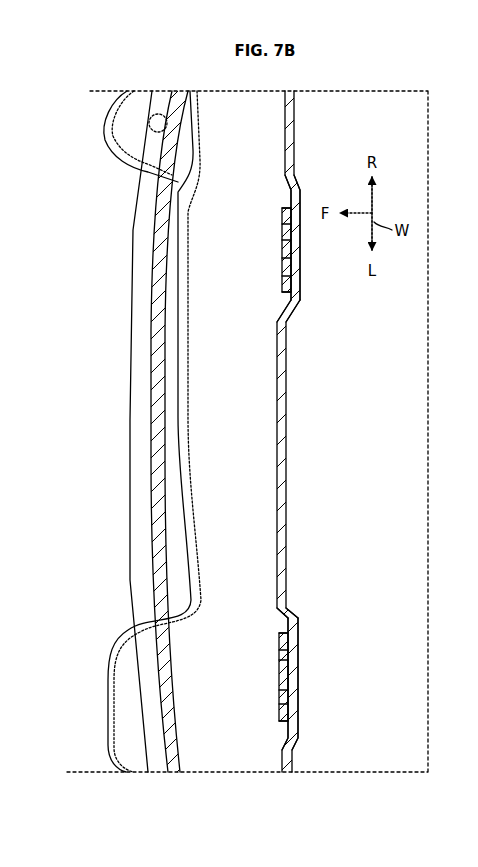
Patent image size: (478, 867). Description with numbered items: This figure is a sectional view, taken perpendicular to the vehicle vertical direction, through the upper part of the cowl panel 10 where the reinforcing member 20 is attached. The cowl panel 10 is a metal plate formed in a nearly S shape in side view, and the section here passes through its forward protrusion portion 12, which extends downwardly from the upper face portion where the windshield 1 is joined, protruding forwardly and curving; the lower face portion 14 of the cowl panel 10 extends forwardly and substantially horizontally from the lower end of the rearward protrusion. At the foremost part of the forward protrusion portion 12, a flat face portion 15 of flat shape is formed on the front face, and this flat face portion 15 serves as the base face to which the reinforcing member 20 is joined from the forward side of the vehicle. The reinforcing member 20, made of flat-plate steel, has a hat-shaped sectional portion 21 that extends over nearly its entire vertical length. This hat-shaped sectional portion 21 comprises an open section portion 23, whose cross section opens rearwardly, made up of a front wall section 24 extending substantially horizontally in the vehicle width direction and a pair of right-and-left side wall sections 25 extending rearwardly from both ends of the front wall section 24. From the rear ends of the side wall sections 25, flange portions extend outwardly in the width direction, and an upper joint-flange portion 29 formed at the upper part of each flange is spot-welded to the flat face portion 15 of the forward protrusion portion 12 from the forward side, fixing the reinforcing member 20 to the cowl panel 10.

The windshield 1 is at (130, 398).
The cowl panel 10 is at (291, 432).
The forward protrusion portion 12 is at (302, 432).
The lower face portion 14 is at (258, 526).
The flat face portion 15 is at (278, 312).
The reinforcing member 20 is at (281, 200).
The hat-shaped sectional portion 21 is at (281, 252).
The open section portion 23 is at (281, 265).
The front wall section 24 is at (286, 246).
The side wall sections 25 is at (285, 226).
The upper joint-flange portion 29 is at (284, 212).